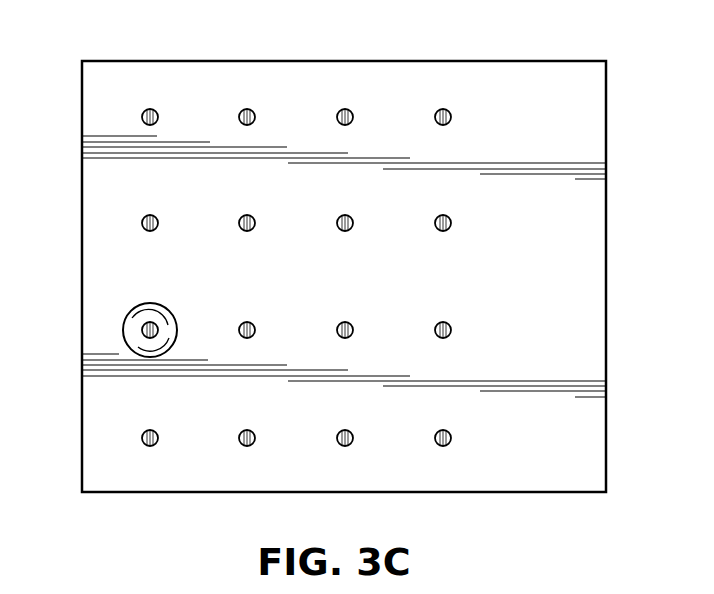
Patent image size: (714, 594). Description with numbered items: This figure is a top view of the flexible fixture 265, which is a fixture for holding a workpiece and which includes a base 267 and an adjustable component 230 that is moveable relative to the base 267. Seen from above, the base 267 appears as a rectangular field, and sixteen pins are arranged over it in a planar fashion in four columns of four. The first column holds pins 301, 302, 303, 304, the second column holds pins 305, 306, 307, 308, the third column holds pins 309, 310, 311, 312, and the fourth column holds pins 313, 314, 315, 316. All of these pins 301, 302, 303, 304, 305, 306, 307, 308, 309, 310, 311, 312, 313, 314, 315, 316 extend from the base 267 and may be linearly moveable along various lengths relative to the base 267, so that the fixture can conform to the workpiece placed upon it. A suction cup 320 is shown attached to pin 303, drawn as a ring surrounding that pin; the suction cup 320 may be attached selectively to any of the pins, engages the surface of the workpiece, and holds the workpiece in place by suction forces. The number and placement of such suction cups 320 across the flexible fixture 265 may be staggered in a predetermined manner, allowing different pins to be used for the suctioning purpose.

The adjustable component 230 is at (62, 312).
The flexible fixture 265 is at (470, 61).
The base 267 is at (563, 103).
The suction cup 320 is at (148, 302).
The pin 301 is at (141, 117).
The pin 302 is at (141, 223).
The pin 303 is at (141, 330).
The pin 304 is at (141, 438).
The pin 305 is at (238, 117).
The pin 306 is at (238, 223).
The pin 307 is at (238, 330).
The pin 308 is at (238, 438).
The pin 309 is at (336, 117).
The pin 310 is at (336, 223).
The pin 311 is at (336, 330).
The pin 312 is at (336, 438).
The pin 313 is at (434, 117).
The pin 314 is at (434, 223).
The pin 315 is at (434, 330).
The pin 316 is at (434, 438).